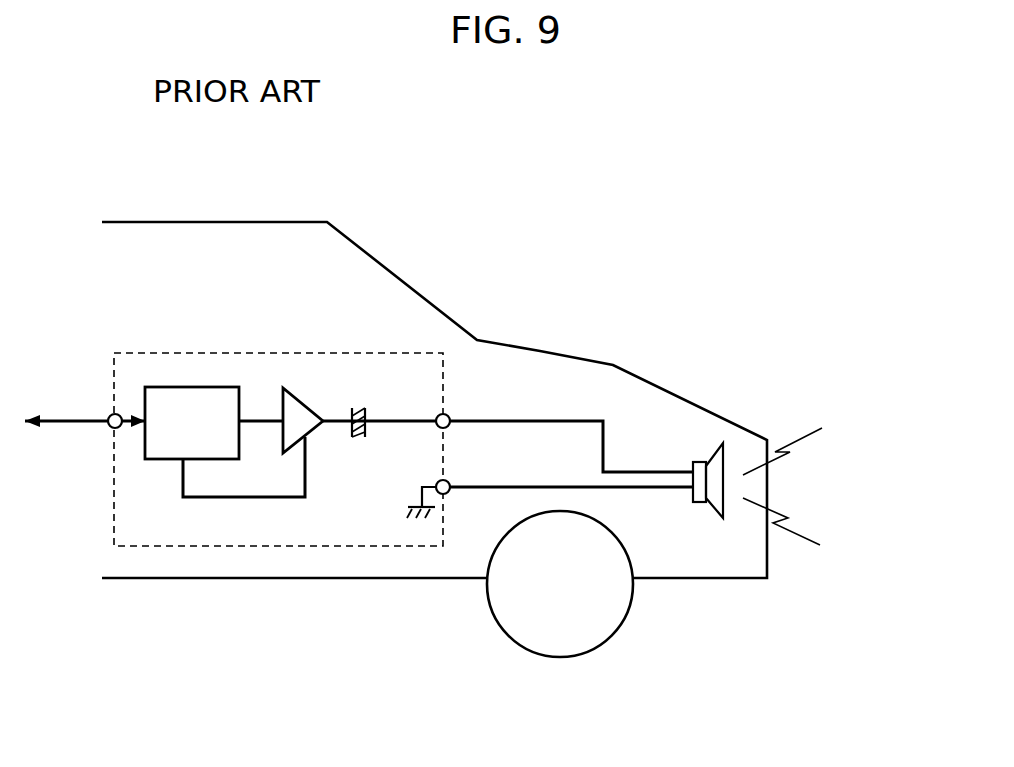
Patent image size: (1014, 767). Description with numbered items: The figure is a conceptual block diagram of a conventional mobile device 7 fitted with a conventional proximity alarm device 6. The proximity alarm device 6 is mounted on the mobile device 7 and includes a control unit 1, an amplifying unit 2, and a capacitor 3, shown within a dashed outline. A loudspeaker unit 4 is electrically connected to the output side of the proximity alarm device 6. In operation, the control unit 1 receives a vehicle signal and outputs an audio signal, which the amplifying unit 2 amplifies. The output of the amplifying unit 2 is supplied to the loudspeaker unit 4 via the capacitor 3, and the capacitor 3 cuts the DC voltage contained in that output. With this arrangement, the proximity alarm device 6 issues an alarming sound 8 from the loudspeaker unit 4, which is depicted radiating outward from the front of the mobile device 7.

The control unit 1 is at (212, 387).
The amplifying unit 2 is at (307, 407).
The capacitor 3 is at (362, 408).
The loudspeaker unit 4 is at (718, 448).
The proximity alarm device 6 is at (198, 547).
The mobile device 7 is at (563, 247).
The alarming sound 8 is at (797, 488).